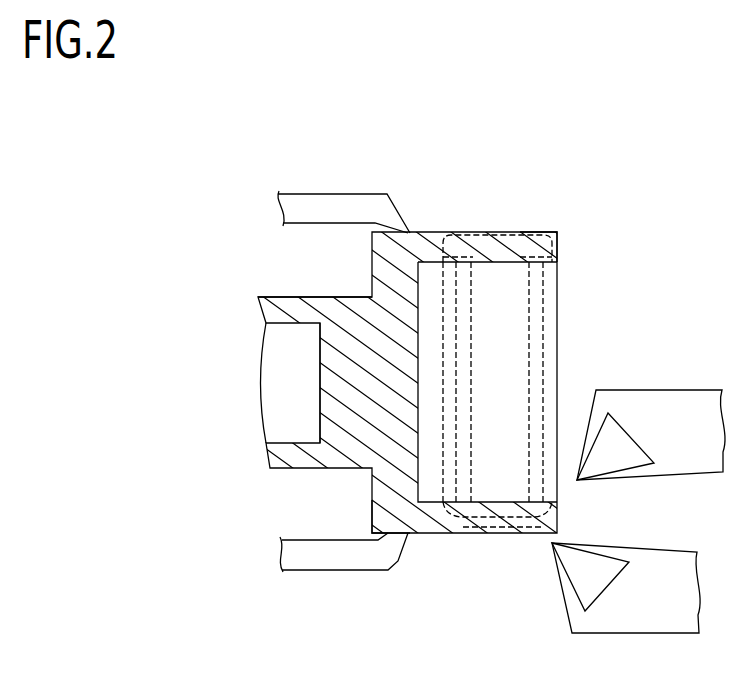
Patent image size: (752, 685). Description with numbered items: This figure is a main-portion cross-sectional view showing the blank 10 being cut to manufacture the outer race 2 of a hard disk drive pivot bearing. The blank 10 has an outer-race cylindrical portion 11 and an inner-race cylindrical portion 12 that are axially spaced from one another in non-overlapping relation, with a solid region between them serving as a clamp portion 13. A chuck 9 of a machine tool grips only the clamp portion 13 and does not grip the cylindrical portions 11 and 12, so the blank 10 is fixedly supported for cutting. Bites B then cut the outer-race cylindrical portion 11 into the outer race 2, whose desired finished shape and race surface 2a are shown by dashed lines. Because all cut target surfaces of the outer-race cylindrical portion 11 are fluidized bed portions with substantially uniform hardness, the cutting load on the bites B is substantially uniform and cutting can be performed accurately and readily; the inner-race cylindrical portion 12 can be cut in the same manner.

The outer race 2 is at (543, 331).
The race surface 2a is at (487, 250).
The chuck 9 is at (338, 571).
The blank 10 is at (445, 232).
The outer-race cylindrical portion 11 is at (545, 232).
The inner-race cylindrical portion 12 is at (283, 297).
The clamp portion 13 is at (377, 531).
The bite B is at (597, 468).